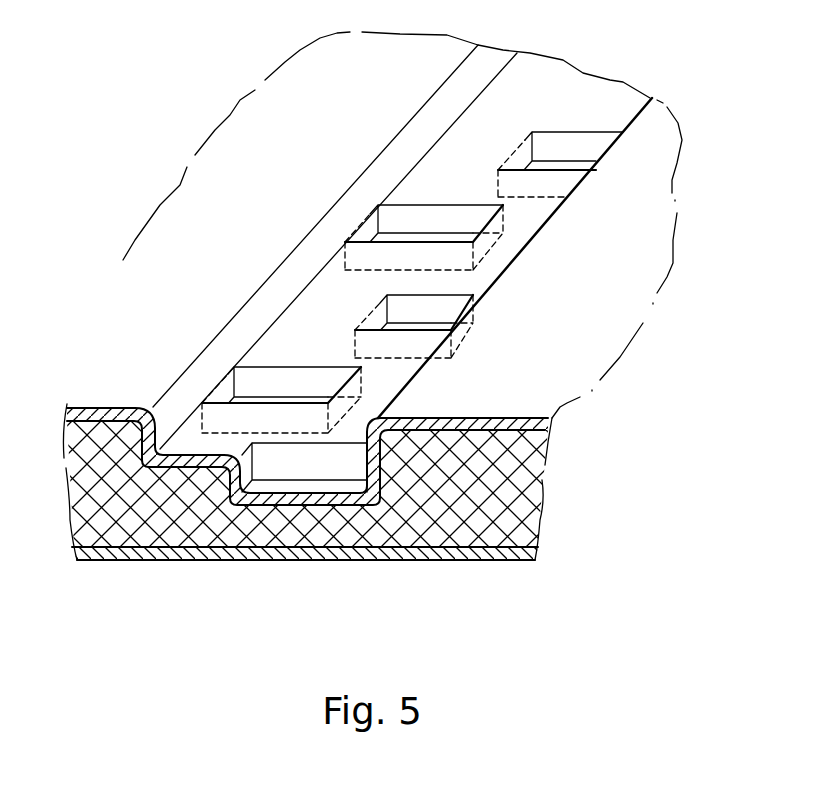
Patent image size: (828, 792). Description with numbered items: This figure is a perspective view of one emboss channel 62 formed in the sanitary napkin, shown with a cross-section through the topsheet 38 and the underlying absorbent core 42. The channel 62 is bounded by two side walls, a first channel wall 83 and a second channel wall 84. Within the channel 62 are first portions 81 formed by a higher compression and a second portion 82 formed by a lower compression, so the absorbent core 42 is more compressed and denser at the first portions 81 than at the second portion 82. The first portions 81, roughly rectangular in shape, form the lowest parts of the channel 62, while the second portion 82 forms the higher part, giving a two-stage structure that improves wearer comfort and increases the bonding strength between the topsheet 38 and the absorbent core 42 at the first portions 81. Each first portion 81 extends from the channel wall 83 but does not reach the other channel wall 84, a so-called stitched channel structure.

The topsheet 38 is at (557, 355).
The absorbent core 42 is at (523, 528).
The channel 62 is at (554, 86).
The first portions 81 is at (544, 183).
The second portion 82 is at (303, 332).
The channel wall 83 is at (195, 388).
The channel wall 84 is at (367, 445).